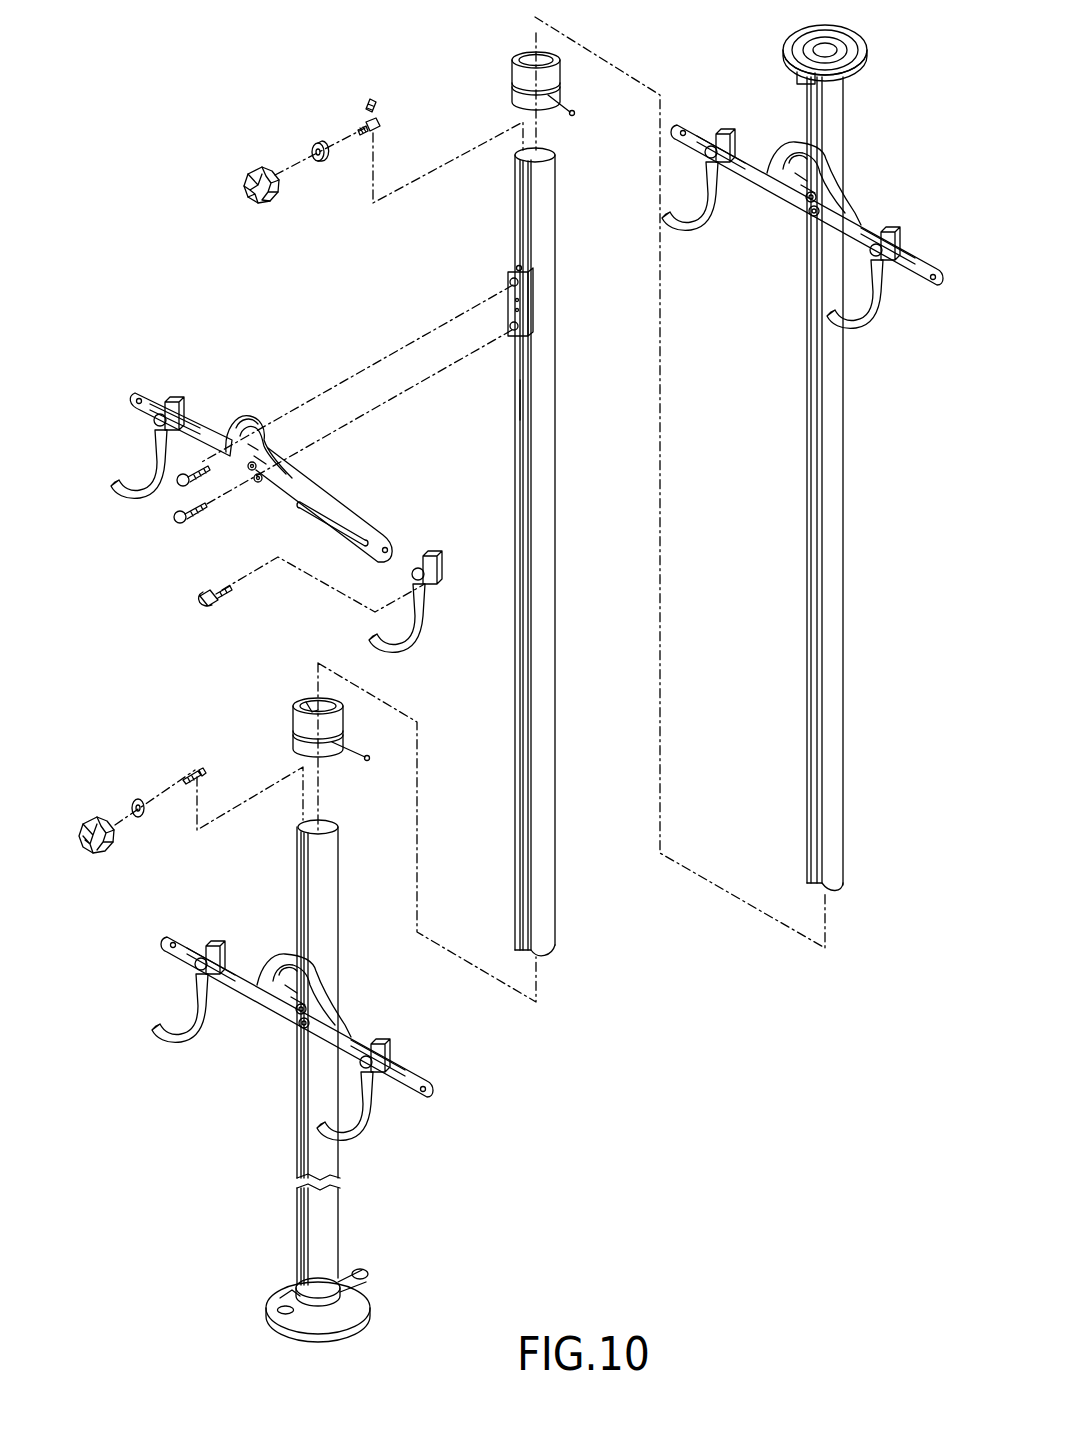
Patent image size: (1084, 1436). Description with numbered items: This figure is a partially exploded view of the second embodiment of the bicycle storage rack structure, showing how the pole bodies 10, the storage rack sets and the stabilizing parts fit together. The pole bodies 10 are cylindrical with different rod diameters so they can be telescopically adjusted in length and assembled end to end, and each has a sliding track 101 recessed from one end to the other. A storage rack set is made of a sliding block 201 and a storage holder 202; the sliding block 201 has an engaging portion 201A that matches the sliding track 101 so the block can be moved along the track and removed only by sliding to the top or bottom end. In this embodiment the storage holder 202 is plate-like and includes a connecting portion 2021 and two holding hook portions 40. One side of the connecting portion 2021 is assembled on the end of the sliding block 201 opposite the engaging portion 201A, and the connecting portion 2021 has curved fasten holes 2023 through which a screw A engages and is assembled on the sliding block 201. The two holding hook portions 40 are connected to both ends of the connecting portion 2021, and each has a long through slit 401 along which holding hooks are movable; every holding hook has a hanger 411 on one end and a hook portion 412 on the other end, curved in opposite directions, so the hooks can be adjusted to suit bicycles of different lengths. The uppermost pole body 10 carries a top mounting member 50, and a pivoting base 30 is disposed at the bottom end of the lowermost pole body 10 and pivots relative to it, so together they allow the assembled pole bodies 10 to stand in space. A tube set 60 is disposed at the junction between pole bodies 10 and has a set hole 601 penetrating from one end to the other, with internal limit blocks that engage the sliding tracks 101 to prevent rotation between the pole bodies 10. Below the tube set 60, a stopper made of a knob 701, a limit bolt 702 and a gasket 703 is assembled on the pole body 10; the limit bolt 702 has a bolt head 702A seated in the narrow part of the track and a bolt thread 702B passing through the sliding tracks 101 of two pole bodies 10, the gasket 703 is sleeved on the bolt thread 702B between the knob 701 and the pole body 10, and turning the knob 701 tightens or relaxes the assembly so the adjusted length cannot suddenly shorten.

The pole body 10 is at (560, 580).
The sliding track 101 is at (520, 395).
The sliding block 201 is at (510, 272).
The engaging portion 201A is at (516, 266).
The storage holder 202 is at (863, 212).
The connecting portion 2021 is at (254, 412).
The fasten hole 2023 is at (236, 420).
The pivoting base 30 is at (376, 1287).
The holding hook portion 40 is at (335, 512).
The long through slit 401 is at (312, 508).
The hanger 411 is at (438, 555).
The hook portion 412 is at (138, 468).
The top mounting member 50 is at (777, 48).
The tube set 60 is at (282, 720).
The set hole 601 is at (308, 706).
The knob 701 is at (250, 184).
The limit bolt 702 is at (372, 100).
The bolt head 702A is at (380, 123).
The bolt thread 702B is at (360, 138).
The gasket 703 is at (312, 147).
The screw A is at (190, 500).